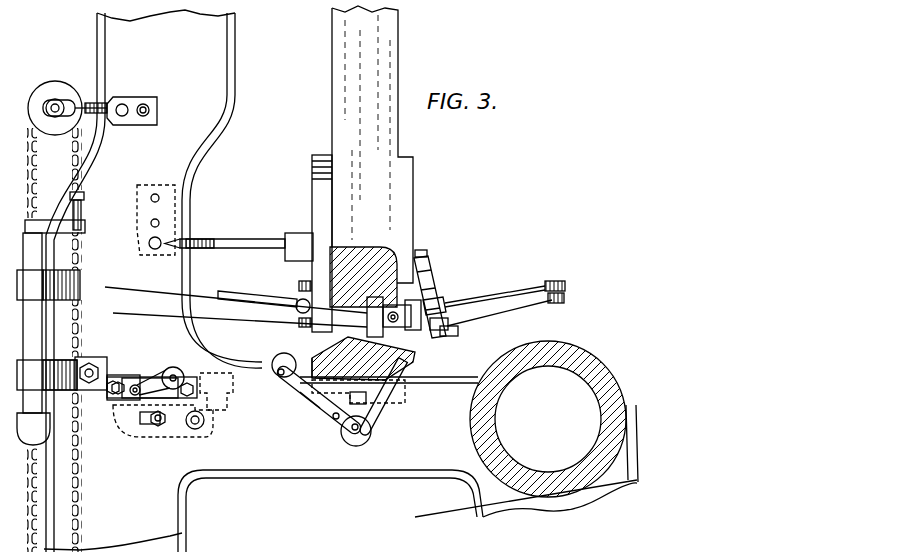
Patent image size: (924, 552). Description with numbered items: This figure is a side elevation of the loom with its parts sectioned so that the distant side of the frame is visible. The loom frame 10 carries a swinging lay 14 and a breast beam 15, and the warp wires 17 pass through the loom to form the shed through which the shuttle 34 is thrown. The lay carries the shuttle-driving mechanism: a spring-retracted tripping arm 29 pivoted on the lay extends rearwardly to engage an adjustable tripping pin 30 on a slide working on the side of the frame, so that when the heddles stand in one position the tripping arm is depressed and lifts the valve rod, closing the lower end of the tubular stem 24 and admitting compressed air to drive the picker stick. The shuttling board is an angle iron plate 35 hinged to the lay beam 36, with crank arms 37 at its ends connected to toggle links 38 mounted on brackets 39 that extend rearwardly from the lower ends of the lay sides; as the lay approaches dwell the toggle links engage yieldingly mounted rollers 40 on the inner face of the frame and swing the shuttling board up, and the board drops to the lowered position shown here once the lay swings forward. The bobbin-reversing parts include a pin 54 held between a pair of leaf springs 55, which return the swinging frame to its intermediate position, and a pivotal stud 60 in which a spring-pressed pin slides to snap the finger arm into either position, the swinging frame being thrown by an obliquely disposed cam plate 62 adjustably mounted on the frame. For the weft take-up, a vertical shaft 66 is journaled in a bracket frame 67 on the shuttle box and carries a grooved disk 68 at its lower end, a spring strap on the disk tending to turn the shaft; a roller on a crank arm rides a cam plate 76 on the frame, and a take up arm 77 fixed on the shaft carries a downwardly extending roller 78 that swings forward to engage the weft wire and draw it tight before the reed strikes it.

The loom frame 10 is at (213, 58).
The swinging lay 14 is at (340, 104).
The breast beam 15 is at (575, 351).
The warp wires 17 is at (188, 318).
The tubular stem 24 is at (30, 321).
The tripping arm 29 is at (268, 293).
The tripping pin 30 is at (80, 233).
The shuttle 34 is at (389, 292).
The angle iron plate 35 is at (420, 352).
The lay beam 36 is at (328, 345).
The crank arms 37 is at (410, 386).
The toggle links 38 is at (355, 437).
The brackets 39 is at (276, 355).
The rollers 40 is at (173, 375).
The pin 54 is at (332, 418).
The leaf springs 55 is at (301, 414).
The pivotal stud 60 is at (380, 398).
The cam plate 62 is at (215, 395).
The vertical shaft 66 is at (440, 289).
The bracket frame 67 is at (433, 270).
The grooved disk 68 is at (440, 335).
The cam plate 76 is at (300, 233).
The take up arm 77 is at (510, 290).
The roller 78 is at (566, 292).